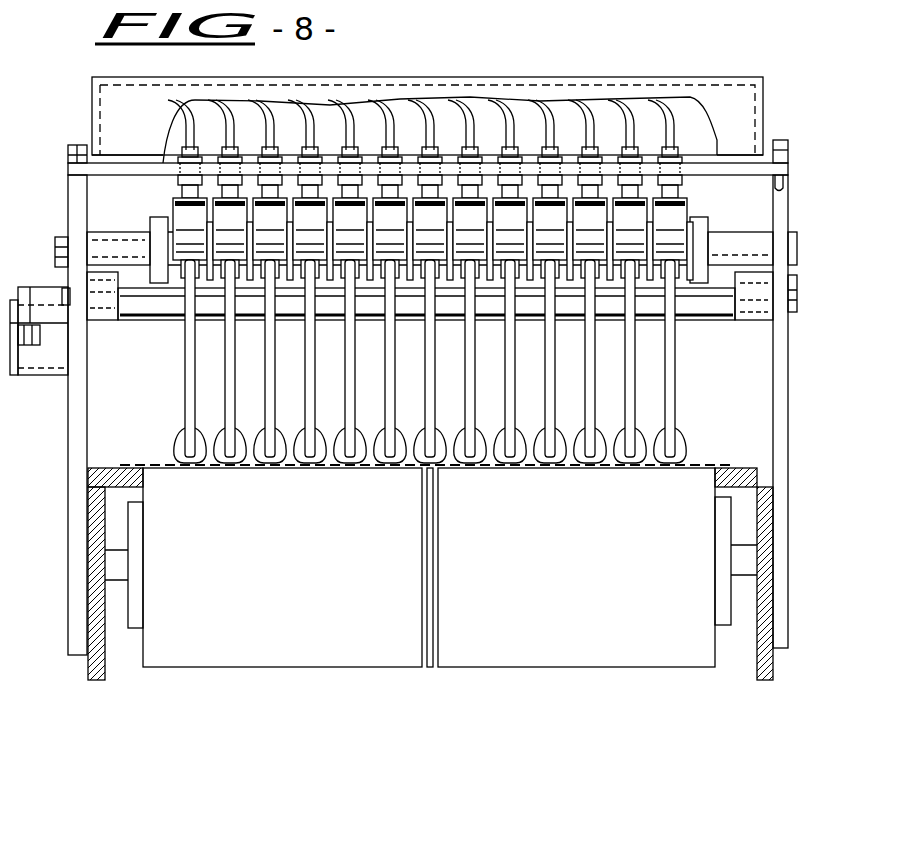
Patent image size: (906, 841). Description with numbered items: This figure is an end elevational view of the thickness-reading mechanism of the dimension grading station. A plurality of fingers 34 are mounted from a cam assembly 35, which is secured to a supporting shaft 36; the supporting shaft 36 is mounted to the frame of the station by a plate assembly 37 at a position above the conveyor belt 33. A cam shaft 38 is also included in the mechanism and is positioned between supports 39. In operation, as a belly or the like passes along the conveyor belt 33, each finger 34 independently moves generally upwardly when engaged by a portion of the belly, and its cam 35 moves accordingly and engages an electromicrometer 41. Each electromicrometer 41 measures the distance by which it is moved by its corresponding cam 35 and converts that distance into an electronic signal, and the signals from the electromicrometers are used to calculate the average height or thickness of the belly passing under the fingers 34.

The conveyor belt 33 is at (702, 463).
The fingers 34 is at (185, 388).
The cam assembly 35 is at (175, 206).
The supporting shaft 36 is at (745, 238).
The plate assembly 37 is at (72, 192).
The cam shaft 38 is at (720, 312).
The supports 39 is at (97, 318).
The electromicrometer 41 is at (668, 186).